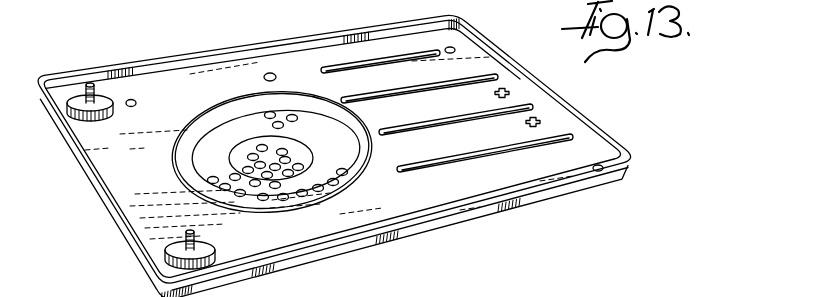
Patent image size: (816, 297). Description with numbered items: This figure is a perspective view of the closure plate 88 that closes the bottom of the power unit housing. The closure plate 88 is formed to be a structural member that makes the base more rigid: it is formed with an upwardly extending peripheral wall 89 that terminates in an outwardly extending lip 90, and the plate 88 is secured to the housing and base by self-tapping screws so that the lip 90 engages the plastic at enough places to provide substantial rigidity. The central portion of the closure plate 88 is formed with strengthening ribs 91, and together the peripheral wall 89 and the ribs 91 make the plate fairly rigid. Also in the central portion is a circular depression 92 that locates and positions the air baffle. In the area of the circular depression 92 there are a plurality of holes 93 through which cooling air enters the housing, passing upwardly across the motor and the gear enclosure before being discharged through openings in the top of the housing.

The closure plate 88 is at (494, 212).
The peripheral wall 89 is at (283, 46).
The lip 90 is at (195, 50).
The strengthening ribs 91 is at (395, 63).
The circular depression 92 is at (183, 150).
The holes 93 is at (283, 200).